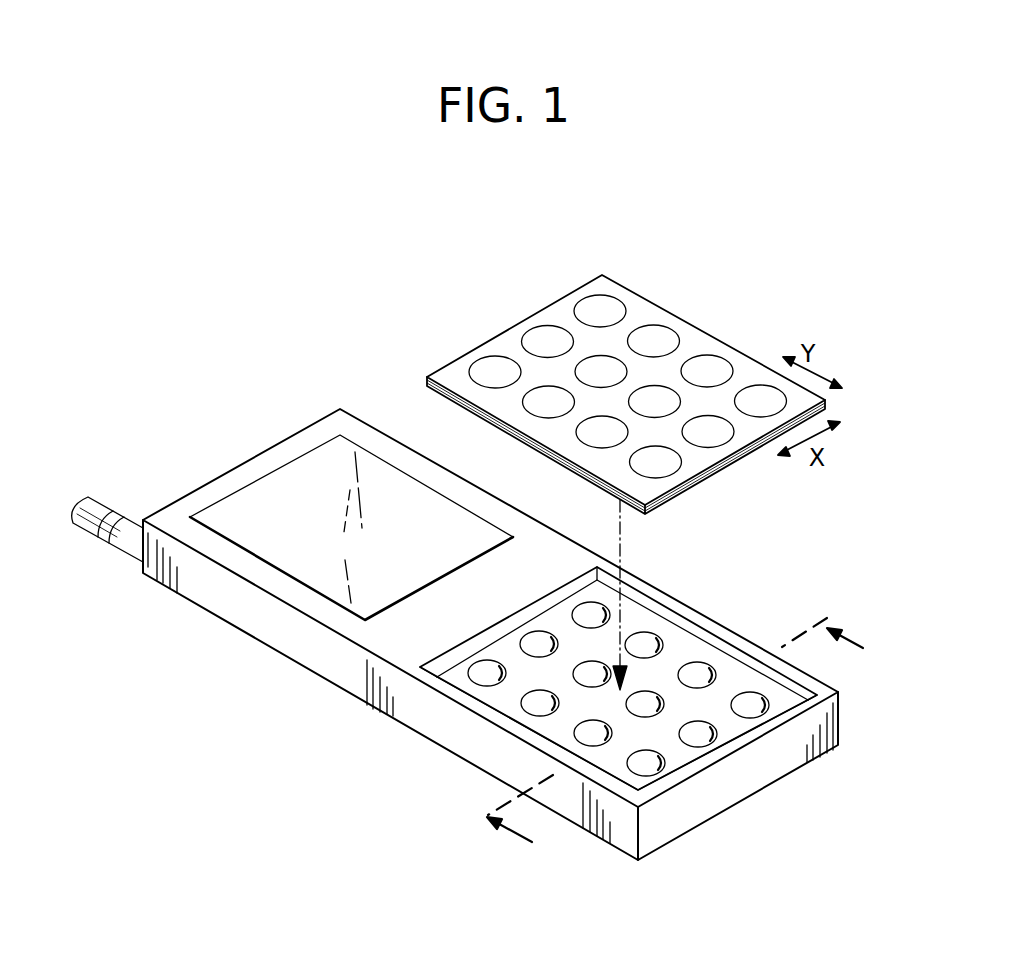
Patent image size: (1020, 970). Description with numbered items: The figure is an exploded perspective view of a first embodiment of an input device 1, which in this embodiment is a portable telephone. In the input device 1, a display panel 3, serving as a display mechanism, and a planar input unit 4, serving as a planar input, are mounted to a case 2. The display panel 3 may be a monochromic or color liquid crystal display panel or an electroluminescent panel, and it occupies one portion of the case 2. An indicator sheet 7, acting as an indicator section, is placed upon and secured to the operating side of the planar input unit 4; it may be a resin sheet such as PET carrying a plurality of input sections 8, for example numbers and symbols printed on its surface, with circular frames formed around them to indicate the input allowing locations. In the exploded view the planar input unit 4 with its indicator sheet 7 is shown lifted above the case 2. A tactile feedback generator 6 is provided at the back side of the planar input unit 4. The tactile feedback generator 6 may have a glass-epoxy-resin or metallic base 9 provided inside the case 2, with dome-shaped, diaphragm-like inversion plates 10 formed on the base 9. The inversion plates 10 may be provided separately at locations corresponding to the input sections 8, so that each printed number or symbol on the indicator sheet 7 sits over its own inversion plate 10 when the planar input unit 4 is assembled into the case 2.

The input device 1 is at (315, 348).
The case 2 is at (275, 640).
The display panel 3 is at (323, 467).
The planar input unit 4 is at (692, 482).
The tactile feedback generator 6 is at (552, 731).
The indicator sheet 7 is at (720, 452).
The input sections 8 is at (532, 328).
The base 9 is at (743, 722).
The inversion plates 10 is at (645, 631).